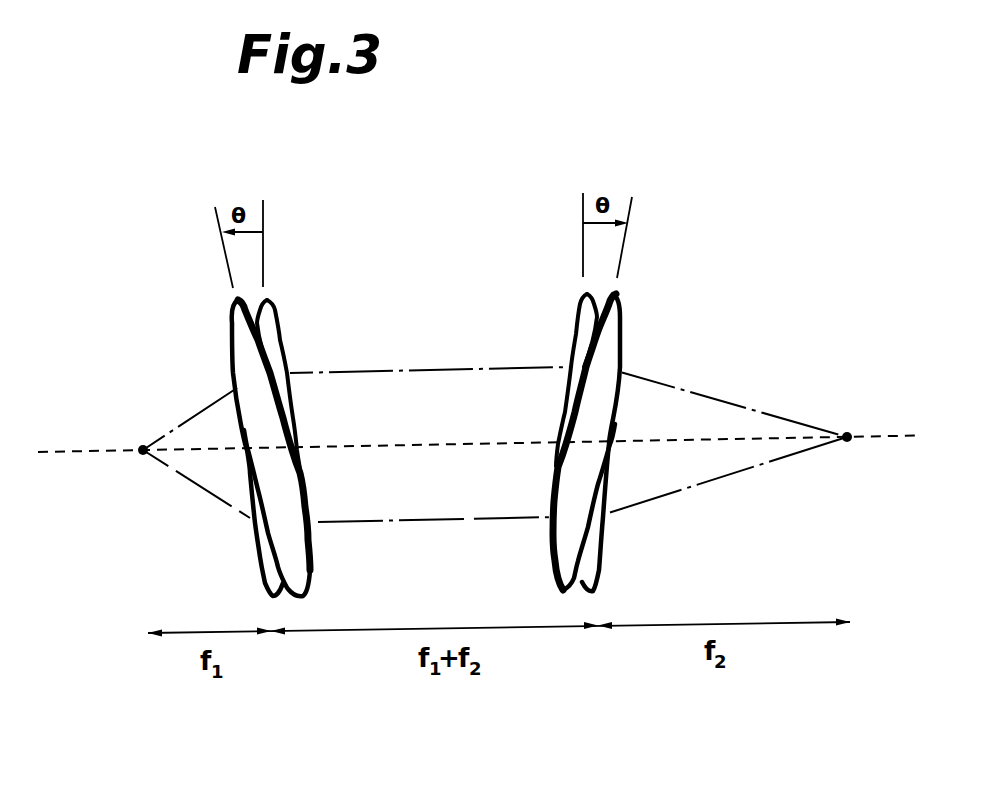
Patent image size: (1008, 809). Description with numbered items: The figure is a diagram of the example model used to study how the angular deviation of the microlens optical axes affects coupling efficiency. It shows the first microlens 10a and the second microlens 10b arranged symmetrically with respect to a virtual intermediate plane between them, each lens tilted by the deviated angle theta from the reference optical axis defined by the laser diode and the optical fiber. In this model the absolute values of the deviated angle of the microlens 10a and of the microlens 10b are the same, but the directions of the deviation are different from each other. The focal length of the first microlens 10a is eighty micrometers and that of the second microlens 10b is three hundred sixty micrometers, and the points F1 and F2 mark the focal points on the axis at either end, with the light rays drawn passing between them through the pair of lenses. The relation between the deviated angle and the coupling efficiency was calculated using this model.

The first microlens 10a is at (283, 317).
The second microlens 10b is at (574, 322).
The front focal point F1 is at (135, 425).
The rear focal point F2 is at (859, 411).